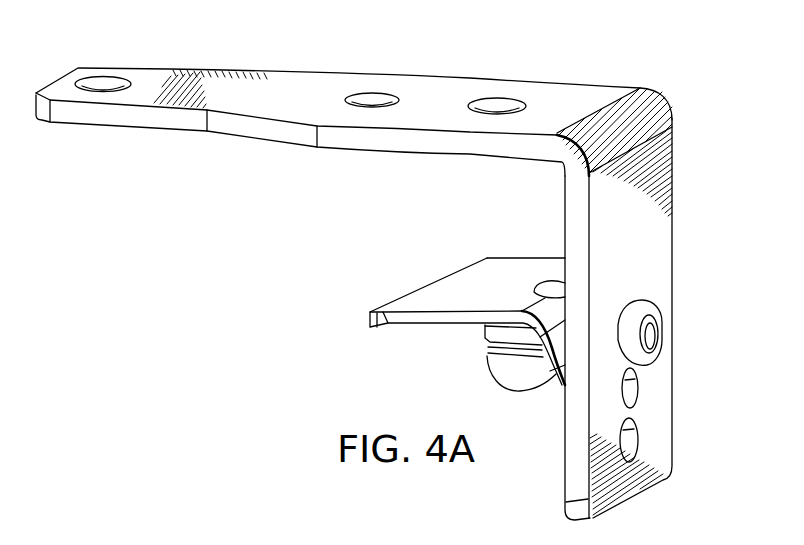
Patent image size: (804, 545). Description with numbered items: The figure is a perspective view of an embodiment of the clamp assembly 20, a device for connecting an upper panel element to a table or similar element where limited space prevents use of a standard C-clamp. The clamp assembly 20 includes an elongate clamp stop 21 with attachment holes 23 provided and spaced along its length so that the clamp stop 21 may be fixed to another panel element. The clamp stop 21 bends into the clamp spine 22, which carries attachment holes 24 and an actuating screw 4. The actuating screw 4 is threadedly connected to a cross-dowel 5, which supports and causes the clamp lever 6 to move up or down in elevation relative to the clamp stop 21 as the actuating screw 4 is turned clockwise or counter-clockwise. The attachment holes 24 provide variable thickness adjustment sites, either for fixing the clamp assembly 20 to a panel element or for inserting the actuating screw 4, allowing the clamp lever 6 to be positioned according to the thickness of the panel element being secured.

The clamp assembly 20 is at (606, 52).
The clamp stop 21 is at (442, 88).
The clamp spine 22 is at (658, 263).
The attachment holes 23 is at (105, 87).
The attachment holes 24 is at (630, 387).
The actuating screw 4 is at (645, 300).
The cross-dowel 5 is at (507, 372).
The clamp lever 6 is at (515, 267).